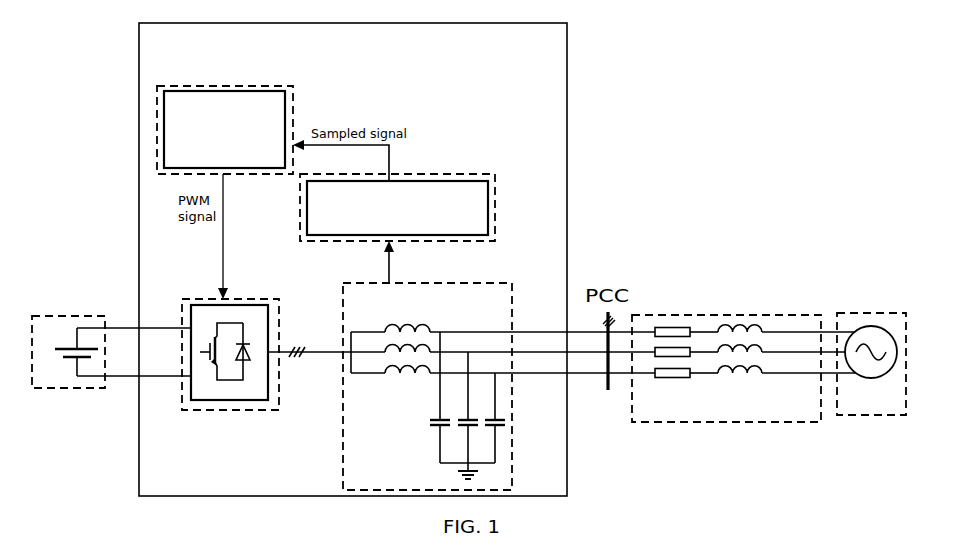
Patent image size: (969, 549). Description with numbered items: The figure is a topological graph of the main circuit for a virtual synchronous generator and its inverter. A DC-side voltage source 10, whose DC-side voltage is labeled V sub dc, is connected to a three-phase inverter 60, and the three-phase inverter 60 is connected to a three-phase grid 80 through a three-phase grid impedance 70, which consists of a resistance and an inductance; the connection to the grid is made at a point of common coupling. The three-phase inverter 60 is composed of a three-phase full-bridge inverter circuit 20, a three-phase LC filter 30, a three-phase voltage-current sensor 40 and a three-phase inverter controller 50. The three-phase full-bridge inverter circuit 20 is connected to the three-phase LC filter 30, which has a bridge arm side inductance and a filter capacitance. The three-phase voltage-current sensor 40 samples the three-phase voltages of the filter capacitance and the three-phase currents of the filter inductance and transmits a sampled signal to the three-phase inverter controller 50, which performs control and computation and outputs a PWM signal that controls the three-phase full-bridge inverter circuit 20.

The DC-side voltage source 10 is at (75, 308).
The three-phase full-bridge inverter circuit 20 is at (244, 293).
The three-phase LC filter 30 is at (514, 277).
The three-phase voltage-current sensor 40 is at (482, 168).
The three-phase inverter controller 50 is at (245, 77).
The three-phase inverter 60 is at (504, 22).
The three-phase grid impedance 70 is at (726, 311).
The three-phase grid 80 is at (874, 307).